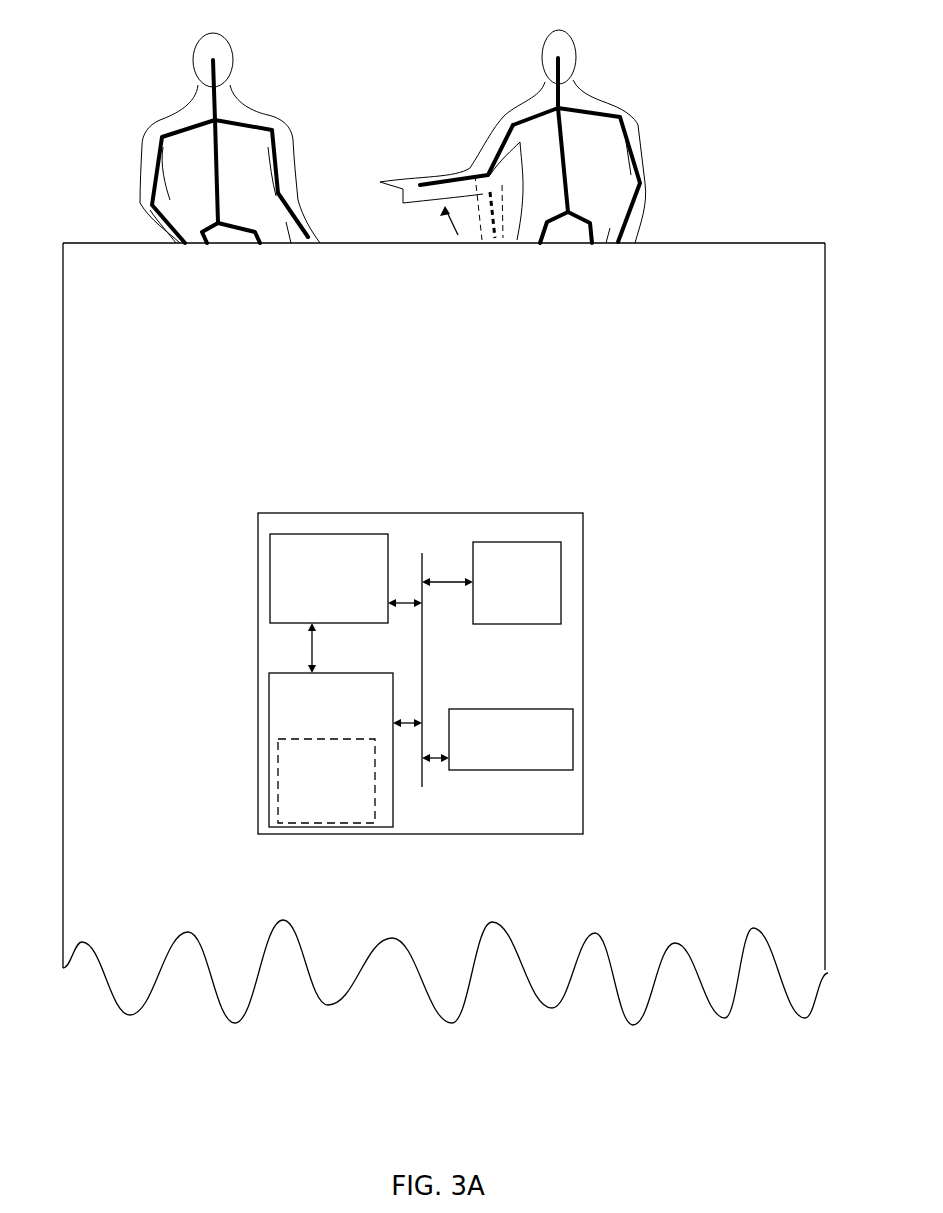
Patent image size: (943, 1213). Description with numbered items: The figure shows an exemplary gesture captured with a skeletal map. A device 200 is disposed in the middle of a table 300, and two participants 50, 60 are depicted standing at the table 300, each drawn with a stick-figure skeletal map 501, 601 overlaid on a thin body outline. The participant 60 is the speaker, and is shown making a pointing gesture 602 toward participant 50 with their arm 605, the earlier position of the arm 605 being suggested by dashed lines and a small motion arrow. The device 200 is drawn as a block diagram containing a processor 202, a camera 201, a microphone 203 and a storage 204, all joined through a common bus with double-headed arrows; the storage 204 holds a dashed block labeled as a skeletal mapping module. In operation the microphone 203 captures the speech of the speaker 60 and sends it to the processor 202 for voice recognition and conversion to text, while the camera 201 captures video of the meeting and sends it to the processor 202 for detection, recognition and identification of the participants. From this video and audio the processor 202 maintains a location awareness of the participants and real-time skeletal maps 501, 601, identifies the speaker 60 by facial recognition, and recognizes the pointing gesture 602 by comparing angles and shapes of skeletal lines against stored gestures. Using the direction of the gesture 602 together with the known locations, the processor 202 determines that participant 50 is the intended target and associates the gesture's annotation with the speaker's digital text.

The participant 50 is at (183, 57).
The skeletal map 501 is at (160, 137).
The participant 60 is at (602, 53).
The skeletal map 601 is at (613, 108).
The pointing gesture 602 is at (424, 146).
The arm 605 is at (487, 130).
The table 300 is at (747, 233).
The device 200 is at (257, 515).
The camera 201 is at (560, 585).
The processor 202 is at (270, 577).
The microphone 203 is at (573, 733).
The storage 204 is at (275, 730).